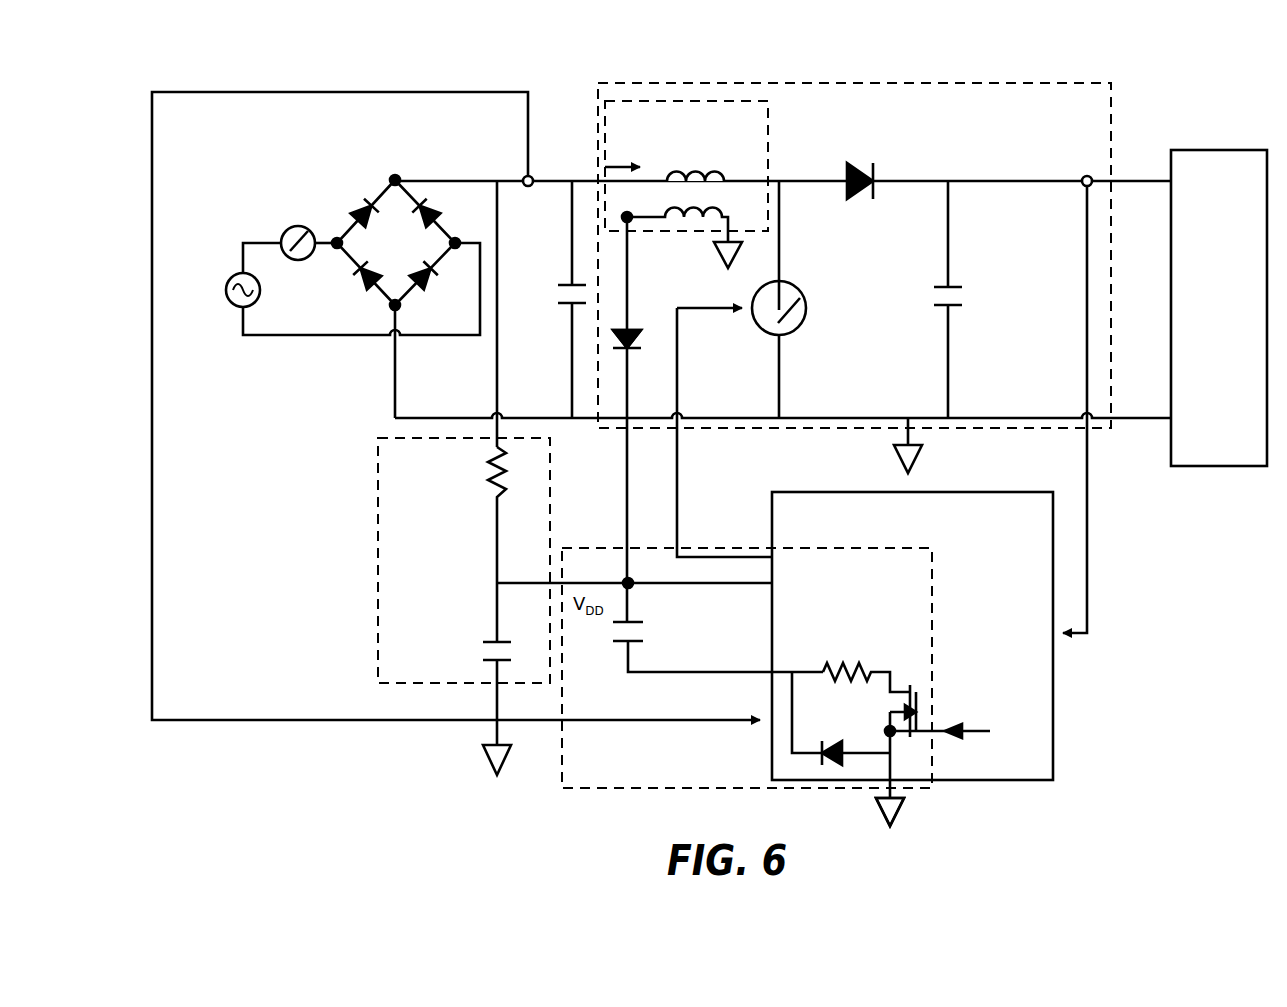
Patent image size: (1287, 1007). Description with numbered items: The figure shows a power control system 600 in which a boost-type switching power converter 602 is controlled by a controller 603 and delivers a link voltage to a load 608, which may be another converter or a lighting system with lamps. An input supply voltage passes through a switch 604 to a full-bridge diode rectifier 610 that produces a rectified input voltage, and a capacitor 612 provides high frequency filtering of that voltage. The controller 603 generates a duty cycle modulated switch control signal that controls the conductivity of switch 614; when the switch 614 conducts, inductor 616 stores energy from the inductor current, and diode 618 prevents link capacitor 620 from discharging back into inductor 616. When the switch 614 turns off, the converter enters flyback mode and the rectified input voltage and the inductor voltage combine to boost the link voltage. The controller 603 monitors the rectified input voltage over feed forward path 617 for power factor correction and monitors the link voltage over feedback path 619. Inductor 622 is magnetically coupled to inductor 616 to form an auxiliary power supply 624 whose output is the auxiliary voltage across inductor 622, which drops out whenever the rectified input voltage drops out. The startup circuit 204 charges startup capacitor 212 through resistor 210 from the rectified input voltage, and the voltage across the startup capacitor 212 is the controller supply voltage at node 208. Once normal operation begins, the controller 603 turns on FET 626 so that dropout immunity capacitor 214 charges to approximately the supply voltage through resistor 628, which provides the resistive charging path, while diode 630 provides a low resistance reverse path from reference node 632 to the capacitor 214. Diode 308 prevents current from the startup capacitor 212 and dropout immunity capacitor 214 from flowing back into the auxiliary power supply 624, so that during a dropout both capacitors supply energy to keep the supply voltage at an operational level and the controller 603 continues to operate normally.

The power control system 600 is at (1152, 125).
The switching power converter 602 is at (683, 83).
The controller 603 is at (810, 492).
The switch 604 is at (287, 230).
The load 608 is at (1219, 308).
The full-bridge diode rectifier 610 is at (396, 242).
The capacitor 612 is at (560, 300).
The switch 614 is at (768, 333).
The inductor 616 is at (722, 173).
The feed forward path 617 is at (318, 92).
The diode 618 is at (852, 170).
The feedback path 619 is at (1090, 636).
The link capacitor 620 is at (938, 307).
The inductor 622 is at (745, 209).
The auxiliary power supply 624 is at (625, 101).
The FET 626 is at (897, 690).
The resistor 628 is at (825, 668).
The diode 630 is at (825, 745).
The reference node 632 is at (897, 822).
The startup circuit 204 is at (378, 545).
The voltage source / supply node 208 is at (233, 305).
The resistor 210 is at (492, 495).
The startup capacitor 212 is at (490, 640).
The dropout immunity capacitor 214 is at (620, 643).
The diode 308 is at (640, 336).